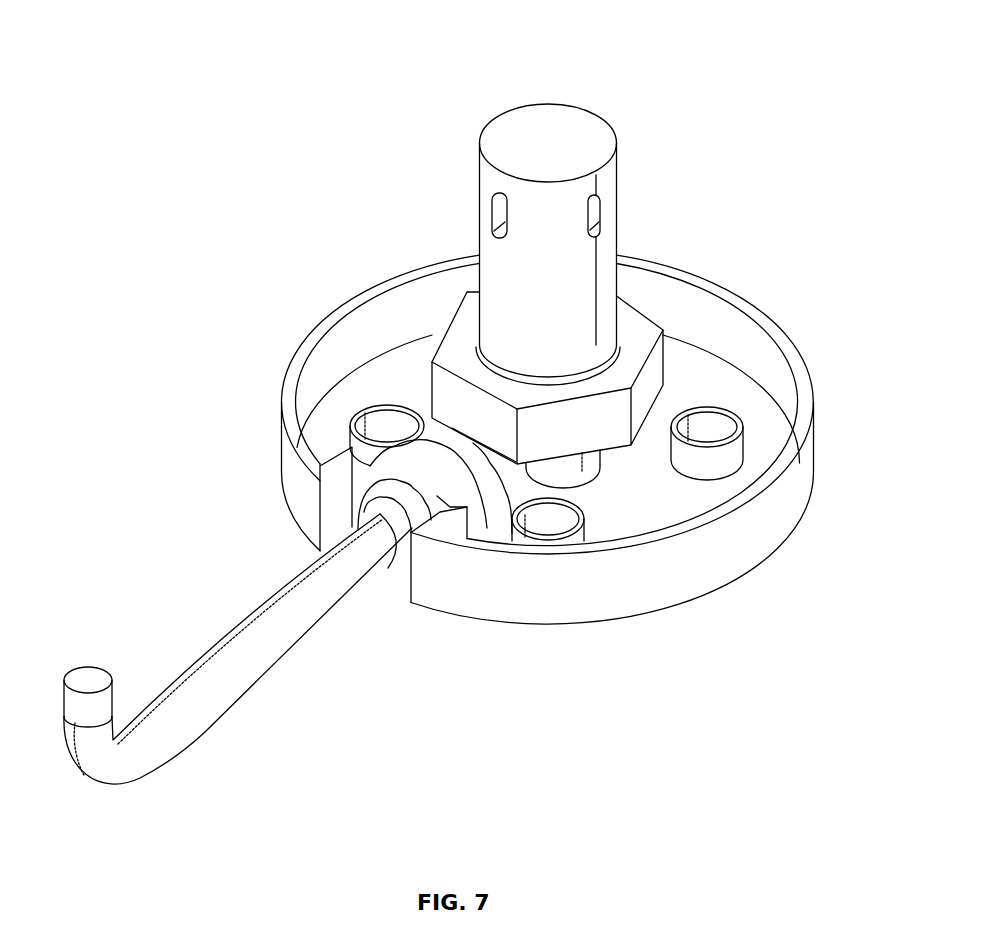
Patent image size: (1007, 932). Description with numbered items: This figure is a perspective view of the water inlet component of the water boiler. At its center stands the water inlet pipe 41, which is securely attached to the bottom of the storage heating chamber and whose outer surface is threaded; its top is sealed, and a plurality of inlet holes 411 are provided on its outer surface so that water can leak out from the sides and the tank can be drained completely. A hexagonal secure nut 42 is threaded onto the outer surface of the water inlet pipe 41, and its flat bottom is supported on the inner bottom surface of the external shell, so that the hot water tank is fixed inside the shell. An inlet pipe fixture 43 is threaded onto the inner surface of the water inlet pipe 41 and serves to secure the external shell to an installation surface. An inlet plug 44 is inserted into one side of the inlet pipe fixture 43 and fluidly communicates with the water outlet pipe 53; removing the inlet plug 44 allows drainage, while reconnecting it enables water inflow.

The water inlet pipe 41 is at (527, 135).
The inlet holes 411 is at (497, 210).
The secure nut 42 is at (467, 342).
The inlet pipe fixture 43 is at (685, 395).
The inlet plug 44 is at (430, 460).
The water outlet pipe 53 is at (285, 618).